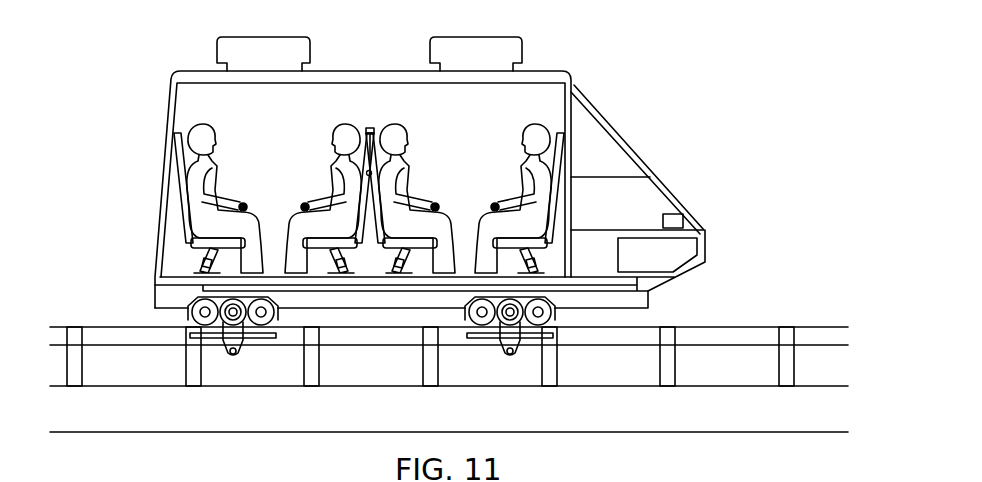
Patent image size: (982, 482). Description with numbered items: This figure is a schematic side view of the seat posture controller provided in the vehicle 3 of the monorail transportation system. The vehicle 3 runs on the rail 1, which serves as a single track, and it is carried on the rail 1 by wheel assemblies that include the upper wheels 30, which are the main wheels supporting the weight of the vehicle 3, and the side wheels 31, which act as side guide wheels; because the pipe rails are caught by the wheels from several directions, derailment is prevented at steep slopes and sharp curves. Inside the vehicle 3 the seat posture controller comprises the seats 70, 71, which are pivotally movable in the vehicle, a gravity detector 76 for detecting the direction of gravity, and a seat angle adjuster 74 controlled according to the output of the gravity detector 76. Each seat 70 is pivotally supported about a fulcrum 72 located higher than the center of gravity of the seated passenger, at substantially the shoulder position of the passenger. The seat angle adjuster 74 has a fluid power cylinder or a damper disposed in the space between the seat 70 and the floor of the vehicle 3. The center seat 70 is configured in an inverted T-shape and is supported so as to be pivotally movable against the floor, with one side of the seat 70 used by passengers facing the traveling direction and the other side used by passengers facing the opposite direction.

The rail 1 is at (715, 340).
The vehicle 3 is at (620, 140).
The upper wheels 30 is at (193, 310).
The side wheels 31 is at (187, 333).
The seat 70 is at (343, 206).
The seat 71 is at (183, 202).
The fulcrum 72 is at (358, 163).
The seat angle adjuster 74 is at (348, 260).
The gravity detector 76 is at (665, 254).